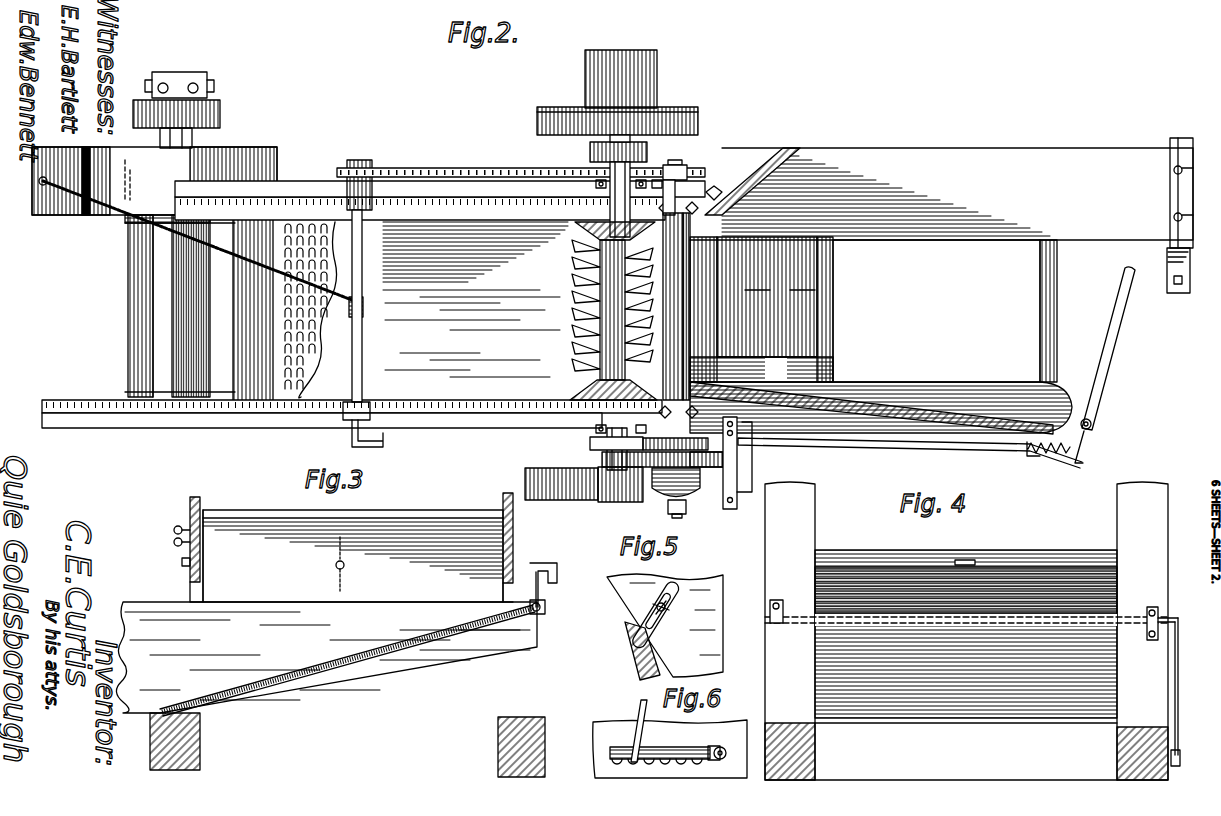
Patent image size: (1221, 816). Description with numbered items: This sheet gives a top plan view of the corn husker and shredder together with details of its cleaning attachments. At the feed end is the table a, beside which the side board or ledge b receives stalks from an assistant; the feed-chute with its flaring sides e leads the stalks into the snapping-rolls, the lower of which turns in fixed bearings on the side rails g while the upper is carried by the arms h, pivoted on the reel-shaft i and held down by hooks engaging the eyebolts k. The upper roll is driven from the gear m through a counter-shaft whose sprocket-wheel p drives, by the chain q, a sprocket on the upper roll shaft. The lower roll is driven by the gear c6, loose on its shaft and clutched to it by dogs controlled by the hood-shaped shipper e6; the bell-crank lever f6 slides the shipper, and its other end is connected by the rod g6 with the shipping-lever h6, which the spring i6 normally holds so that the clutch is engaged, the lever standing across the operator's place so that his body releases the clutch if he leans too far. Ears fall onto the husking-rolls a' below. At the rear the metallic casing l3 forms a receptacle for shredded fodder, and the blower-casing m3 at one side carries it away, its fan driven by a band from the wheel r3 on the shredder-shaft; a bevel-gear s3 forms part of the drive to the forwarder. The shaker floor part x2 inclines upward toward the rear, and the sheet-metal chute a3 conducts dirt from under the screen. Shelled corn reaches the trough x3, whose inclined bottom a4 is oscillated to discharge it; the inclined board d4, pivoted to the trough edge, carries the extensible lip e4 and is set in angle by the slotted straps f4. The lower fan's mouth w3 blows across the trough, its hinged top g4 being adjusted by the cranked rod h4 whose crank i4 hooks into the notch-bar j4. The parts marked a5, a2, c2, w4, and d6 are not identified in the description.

In FIG. 2, the blower-casing m3 is at (222, 158).
In FIG. 2, the side rails g is at (317, 183).
In FIG. 2, the chain q is at (467, 175).
In FIG. 2, the hub a5 is at (600, 78).
In FIG. 2, the wheel r3 is at (690, 116).
In FIG. 2, the vertical shaft a2 is at (610, 185).
In FIG. 2, the bevel-gear s3 is at (648, 155).
In FIG. 2, the sprocket-wheel p is at (690, 177).
In FIG. 2, the flaring sides e is at (762, 162).
In FIG. 2, the side board or ledge b is at (941, 215).
In FIG. 2, the arms h is at (490, 210).
In FIG. 2, the metallic casing l3 is at (137, 302).
In FIG. 2, the upwardly-inclined floor part x2 is at (366, 300).
In FIG. 2, the spiral conveyor c2 is at (573, 313).
In FIG. 2, the reel-shaft i is at (350, 360).
In FIG. 2, the table a is at (881, 336).
In FIG. 2, the eyebolts k is at (761, 310).
In FIG. 2, the shipping-lever h6 is at (1113, 362).
In FIG. 2, the gear m is at (600, 443).
In FIG. 2, the husking-rolls a' is at (641, 463).
In FIG. 2, the rod g6 is at (866, 443).
In FIG. 2, the spring i6 is at (1040, 459).
In FIG. 2, the worm w4 is at (562, 485).
In FIG. 2, the sheet-metal chute a3 is at (615, 492).
In FIG. 2, the bowl d6 is at (660, 486).
In FIG. 2, the hood-shaped shipper e6 is at (672, 498).
In FIG. 2, the gear c6 is at (694, 462).
In FIG. 2, the bell-crank lever f6 is at (740, 478).
In FIG. 3, the inclined board d4 is at (196, 583).
In FIG. 5, the inclined board d4 is at (647, 658).
In FIG. 3, the extensible lip e4 is at (353, 556).
In FIG. 3, the trough x3 is at (326, 657).
In FIG. 3, the inclined bottom a4 is at (390, 653).
In FIG. 5, the slotted straps f4 is at (664, 615).
In FIG. 6, the crank i4 is at (636, 715).
In FIG. 4, the crank i4 is at (1173, 697).
In FIG. 6, the notch-bar j4 is at (688, 748).
In FIG. 4, the hinged top g4 is at (1027, 597).
In FIG. 4, the cranked rod h4 is at (1128, 620).
In FIG. 4, the mouth w3 is at (850, 673).